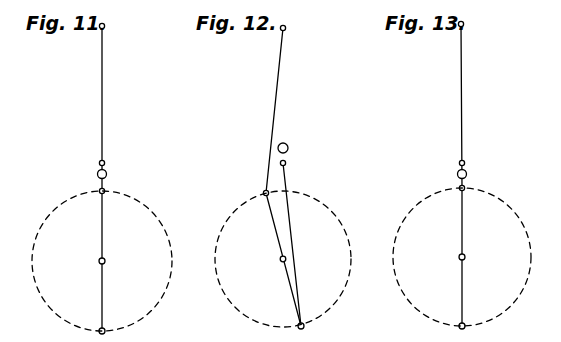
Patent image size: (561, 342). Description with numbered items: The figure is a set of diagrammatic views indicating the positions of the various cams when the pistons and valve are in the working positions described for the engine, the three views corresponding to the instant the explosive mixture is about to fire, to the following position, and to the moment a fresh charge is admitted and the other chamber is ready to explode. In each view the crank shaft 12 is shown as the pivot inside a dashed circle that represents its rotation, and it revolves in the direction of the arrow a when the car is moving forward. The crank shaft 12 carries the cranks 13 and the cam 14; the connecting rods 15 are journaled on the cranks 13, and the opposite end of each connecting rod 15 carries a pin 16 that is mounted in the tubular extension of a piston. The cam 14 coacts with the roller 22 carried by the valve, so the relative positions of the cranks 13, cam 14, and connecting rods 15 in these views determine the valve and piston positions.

In FIG. 11, the crank shaft 12 is at (108, 262).
In FIG. 12, the crank shaft 12 is at (280, 262).
In FIG. 13, the crank shaft 12 is at (470, 256).
In FIG. 11, the crank 13 is at (107, 108).
In FIG. 12, the crank 13 is at (269, 218).
In FIG. 13, the crank 13 is at (459, 222).
In FIG. 11, the cam 14 is at (108, 178).
In FIG. 12, the cam 14 is at (291, 152).
In FIG. 13, the cam 14 is at (469, 176).
In FIG. 12, the connecting rod 15 is at (271, 133).
In FIG. 13, the connecting rod 15 is at (467, 108).
In FIG. 11, the pin 16 is at (108, 27).
In FIG. 12, the pin 16 is at (288, 29).
In FIG. 13, the pin 16 is at (464, 24).
In FIG. 11, the roller 22 is at (108, 170).
In FIG. 12, the roller 22 is at (292, 146).
In FIG. 13, the roller 22 is at (467, 170).
In FIG. 11, the arrow a is at (179, 207).
In FIG. 12, the arrow a is at (363, 213).
In FIG. 13, the arrow a is at (535, 203).